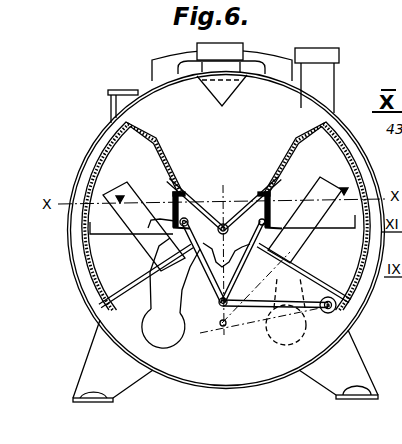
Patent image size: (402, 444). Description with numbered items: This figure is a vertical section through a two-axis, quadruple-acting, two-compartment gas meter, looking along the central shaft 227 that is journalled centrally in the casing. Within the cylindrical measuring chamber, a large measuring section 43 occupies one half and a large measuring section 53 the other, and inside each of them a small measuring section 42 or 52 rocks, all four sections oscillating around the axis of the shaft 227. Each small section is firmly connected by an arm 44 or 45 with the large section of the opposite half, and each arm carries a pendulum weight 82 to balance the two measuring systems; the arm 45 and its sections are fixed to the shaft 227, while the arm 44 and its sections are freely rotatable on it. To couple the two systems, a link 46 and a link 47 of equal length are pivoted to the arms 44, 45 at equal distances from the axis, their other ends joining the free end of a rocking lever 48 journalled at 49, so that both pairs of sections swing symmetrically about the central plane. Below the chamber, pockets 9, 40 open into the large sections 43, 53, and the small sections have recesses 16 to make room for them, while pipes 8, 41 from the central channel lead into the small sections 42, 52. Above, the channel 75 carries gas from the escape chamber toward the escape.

The pipe 8 is at (147, 245).
The pocket 9 is at (193, 193).
The recess 16 is at (174, 193).
The pocket 40 is at (226, 205).
The pipe 41 is at (300, 240).
The small measuring section 42 is at (120, 145).
The large measuring section 43 is at (298, 128).
The arm 44 is at (161, 190).
The arm 45 is at (268, 225).
The link 46 is at (217, 300).
The link 47 is at (240, 278).
The rocking lever 48 is at (226, 326).
The journal 49 is at (325, 311).
The small measuring section 52 is at (294, 143).
The large measuring section 53 is at (150, 138).
The channel 75 is at (233, 91).
The pendulum weight 82 is at (168, 338).
The shaft 227 is at (216, 222).